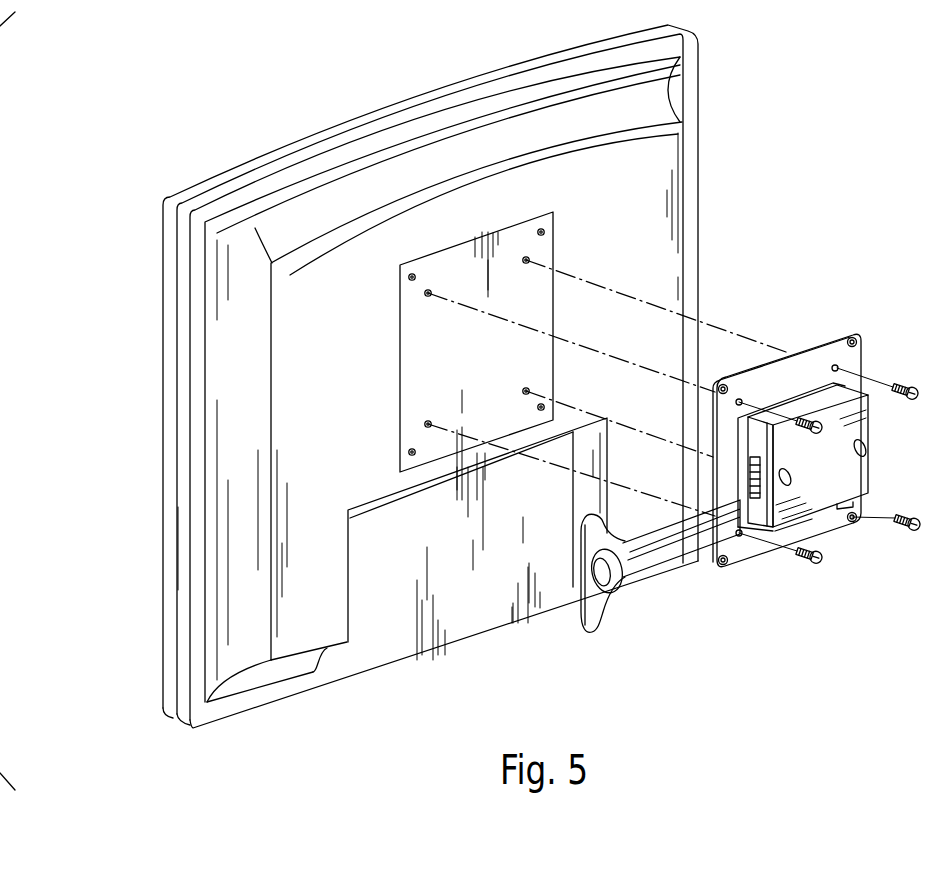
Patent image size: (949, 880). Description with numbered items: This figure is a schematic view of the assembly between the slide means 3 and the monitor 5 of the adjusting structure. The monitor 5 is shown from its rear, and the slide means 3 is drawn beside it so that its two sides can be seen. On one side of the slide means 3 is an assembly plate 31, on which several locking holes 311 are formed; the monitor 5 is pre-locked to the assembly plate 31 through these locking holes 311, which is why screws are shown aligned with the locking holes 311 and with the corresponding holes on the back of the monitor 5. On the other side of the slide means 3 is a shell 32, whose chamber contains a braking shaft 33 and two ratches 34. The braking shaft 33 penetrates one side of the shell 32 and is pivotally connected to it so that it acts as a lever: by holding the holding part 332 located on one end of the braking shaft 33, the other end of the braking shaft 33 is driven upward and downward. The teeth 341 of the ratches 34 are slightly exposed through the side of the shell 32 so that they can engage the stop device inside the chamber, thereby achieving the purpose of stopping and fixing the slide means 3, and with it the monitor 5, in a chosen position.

The monitor 5 is at (703, 178).
The slide means 3 is at (760, 474).
The assembly plate 31 is at (779, 456).
The locking holes 311 is at (850, 340).
The shell 32 is at (873, 488).
The braking shaft 33 is at (660, 567).
The holding part 332 is at (612, 594).
The ratches 34 is at (698, 448).
The teeth 341 is at (750, 474).